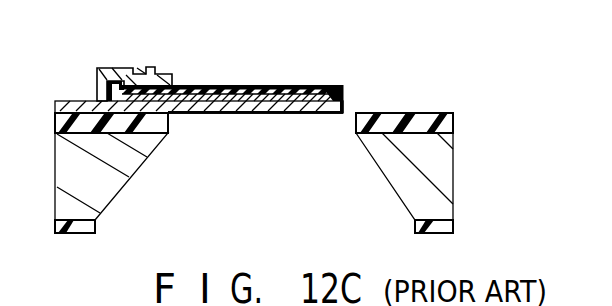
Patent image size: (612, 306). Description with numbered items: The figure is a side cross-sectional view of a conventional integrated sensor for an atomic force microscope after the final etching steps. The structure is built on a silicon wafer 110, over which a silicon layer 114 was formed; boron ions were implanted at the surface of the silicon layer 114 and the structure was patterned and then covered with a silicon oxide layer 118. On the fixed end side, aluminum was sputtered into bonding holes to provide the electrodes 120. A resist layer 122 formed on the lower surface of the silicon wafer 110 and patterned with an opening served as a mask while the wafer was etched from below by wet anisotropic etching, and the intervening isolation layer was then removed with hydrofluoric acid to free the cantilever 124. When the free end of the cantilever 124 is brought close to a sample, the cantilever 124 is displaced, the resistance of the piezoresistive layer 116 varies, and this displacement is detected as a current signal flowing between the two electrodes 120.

The silicon wafer 110 is at (131, 178).
The silicon layer 114 is at (317, 91).
The piezoresistive layer 116 is at (270, 89).
The silicon oxide layer 118 is at (207, 85).
The electrodes 120 is at (96, 70).
The resist layer 122 is at (96, 228).
The cantilever 124 is at (230, 118).